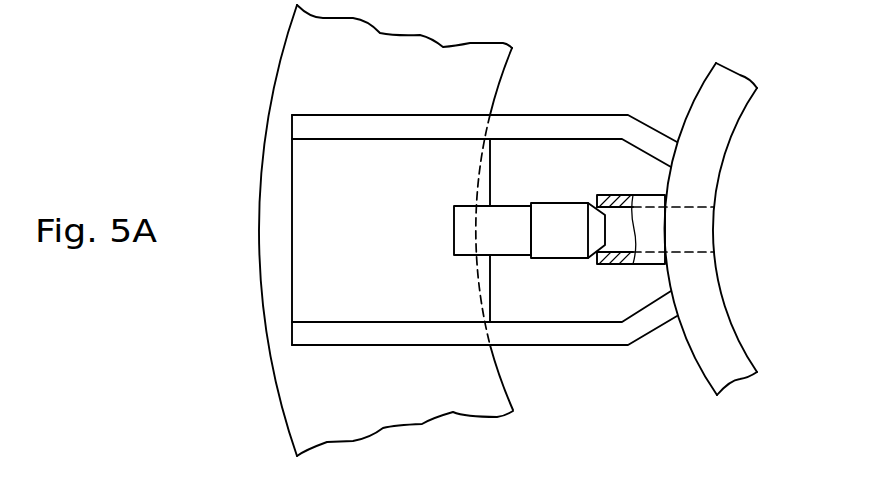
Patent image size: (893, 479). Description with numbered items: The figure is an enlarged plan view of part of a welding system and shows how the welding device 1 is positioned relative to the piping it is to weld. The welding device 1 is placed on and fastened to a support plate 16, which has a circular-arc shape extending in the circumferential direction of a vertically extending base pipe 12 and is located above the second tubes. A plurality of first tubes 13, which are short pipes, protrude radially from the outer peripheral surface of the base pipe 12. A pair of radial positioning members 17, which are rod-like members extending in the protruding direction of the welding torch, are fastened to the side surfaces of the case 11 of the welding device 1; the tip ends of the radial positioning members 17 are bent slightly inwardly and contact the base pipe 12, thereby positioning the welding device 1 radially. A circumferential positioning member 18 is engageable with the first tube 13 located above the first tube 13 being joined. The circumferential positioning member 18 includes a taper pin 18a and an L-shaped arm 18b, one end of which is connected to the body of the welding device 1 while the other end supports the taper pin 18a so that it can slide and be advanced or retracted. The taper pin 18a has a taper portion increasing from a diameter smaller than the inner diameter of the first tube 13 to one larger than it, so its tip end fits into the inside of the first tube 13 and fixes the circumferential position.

The welding device 1 is at (292, 295).
The case 11 is at (313, 250).
The base pipe 12 is at (728, 108).
The first tube 13 is at (618, 265).
The support plate 16 is at (317, 75).
The radial positioning member 17 is at (580, 127).
The circumferential positioning member 18 is at (564, 240).
The taper pin 18a is at (557, 245).
The L-shaped arm 18b is at (512, 223).